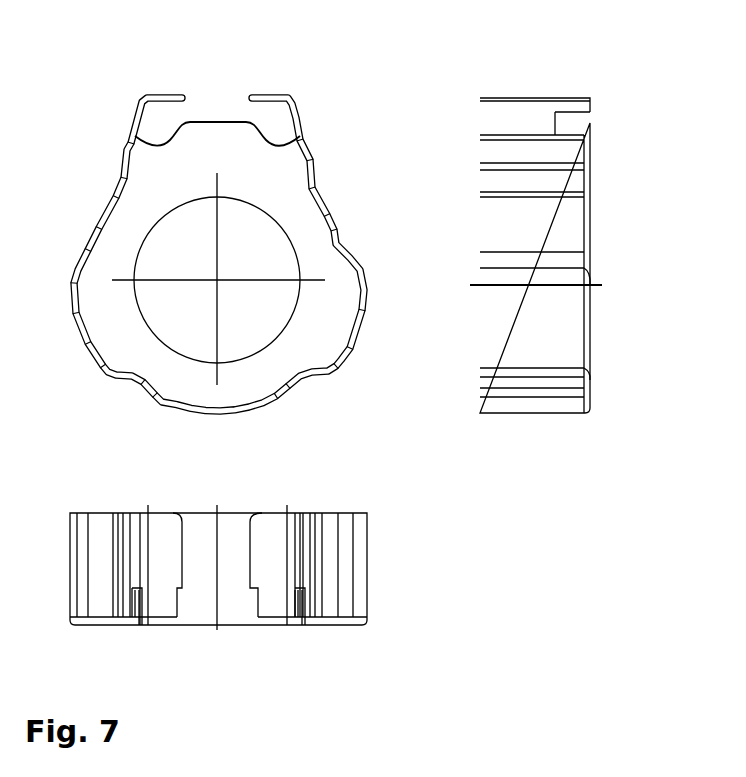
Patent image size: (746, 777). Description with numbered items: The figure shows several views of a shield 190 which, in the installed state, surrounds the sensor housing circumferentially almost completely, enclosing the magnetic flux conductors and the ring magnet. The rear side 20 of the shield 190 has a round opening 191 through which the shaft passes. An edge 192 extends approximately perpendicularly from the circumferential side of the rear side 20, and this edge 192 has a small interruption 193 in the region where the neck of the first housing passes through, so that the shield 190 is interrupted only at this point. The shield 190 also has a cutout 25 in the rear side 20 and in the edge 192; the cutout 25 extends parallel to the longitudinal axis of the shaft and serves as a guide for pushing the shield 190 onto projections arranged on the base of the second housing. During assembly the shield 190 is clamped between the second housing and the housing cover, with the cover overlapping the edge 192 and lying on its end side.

The shield 190 is at (392, 347).
The edge 192 is at (300, 117).
The interruption 193 is at (183, 97).
The round opening 191 is at (267, 348).
The rear side 20 is at (317, 335).
The cutout 25 is at (563, 135).